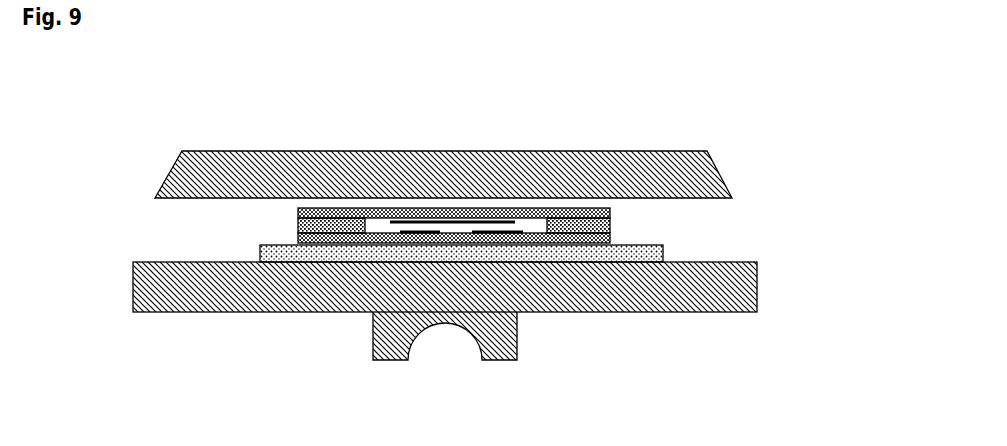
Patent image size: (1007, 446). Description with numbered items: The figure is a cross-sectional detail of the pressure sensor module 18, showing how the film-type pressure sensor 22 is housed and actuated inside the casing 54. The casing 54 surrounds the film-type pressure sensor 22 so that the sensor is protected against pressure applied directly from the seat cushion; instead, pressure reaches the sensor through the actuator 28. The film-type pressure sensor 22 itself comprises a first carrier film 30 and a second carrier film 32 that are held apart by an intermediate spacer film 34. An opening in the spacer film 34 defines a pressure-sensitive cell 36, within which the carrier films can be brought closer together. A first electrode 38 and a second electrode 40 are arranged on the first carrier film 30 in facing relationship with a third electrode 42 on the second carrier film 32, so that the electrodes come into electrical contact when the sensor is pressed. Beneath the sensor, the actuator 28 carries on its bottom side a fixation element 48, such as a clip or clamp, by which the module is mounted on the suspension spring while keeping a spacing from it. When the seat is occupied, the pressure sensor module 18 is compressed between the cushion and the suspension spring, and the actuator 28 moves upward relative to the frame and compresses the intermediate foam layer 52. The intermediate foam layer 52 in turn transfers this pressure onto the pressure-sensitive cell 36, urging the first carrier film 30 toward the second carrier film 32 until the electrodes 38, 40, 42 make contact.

The pressure sensor module 18 is at (788, 150).
The film-type pressure sensor 22 is at (634, 220).
The actuator 28 is at (673, 297).
The first carrier film 30 is at (277, 238).
The second carrier film 32 is at (298, 212).
The spacer film 34 is at (297, 227).
The pressure-sensitive cell 36 is at (430, 197).
The first electrode 38 is at (400, 232).
The second electrode 40 is at (520, 234).
The third electrode 42 is at (457, 220).
The fixation element 48 is at (507, 335).
The intermediate foam layer 52 is at (650, 250).
The casing 54 is at (590, 151).